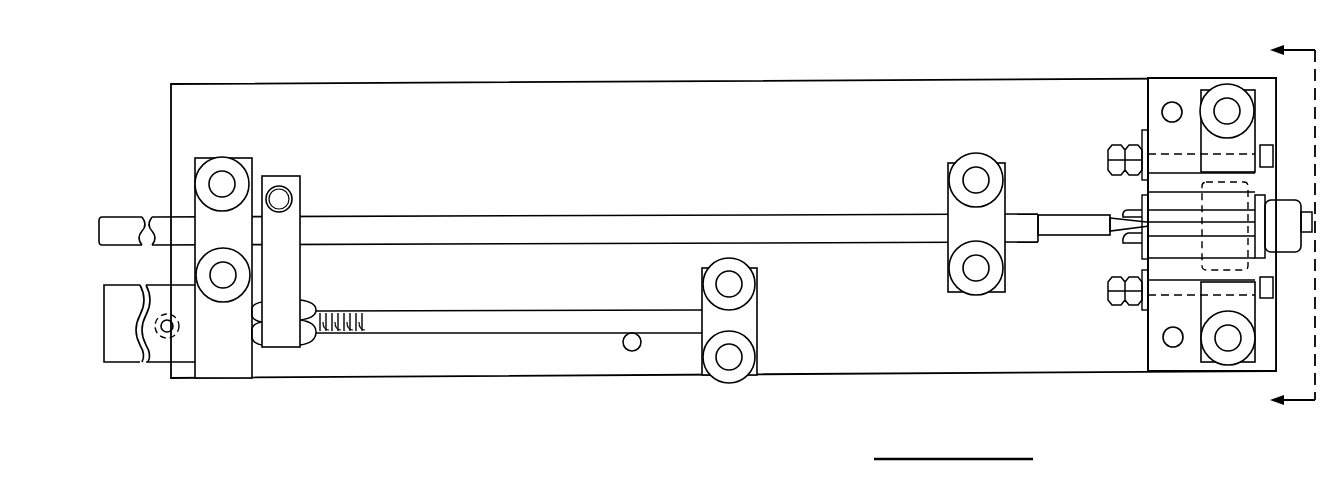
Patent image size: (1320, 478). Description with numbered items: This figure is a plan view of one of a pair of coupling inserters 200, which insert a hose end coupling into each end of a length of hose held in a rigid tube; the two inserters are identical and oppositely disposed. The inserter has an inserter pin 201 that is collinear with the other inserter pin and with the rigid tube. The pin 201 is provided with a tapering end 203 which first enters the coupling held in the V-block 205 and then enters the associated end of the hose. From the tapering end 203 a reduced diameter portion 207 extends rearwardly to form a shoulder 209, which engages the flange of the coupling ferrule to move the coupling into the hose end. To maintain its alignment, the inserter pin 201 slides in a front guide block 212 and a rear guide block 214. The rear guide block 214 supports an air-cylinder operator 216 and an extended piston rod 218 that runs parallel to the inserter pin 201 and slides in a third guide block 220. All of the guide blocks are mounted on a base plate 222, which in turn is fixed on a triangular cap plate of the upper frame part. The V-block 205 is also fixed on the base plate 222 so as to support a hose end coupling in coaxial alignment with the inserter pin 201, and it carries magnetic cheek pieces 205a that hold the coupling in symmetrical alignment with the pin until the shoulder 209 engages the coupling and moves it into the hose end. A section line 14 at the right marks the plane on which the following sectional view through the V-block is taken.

The coupling inserter 200 is at (430, 78).
The base plate 222 is at (648, 92).
The inserter pin 201 is at (474, 228).
The air-cylinder operator 216 is at (162, 350).
The rear guide block 214 is at (235, 367).
The extended piston rod 218 is at (513, 323).
The third guide block 220 is at (712, 323).
The front guide block 212 is at (957, 210).
The shoulder 209 is at (1048, 210).
The reduced diameter portion 207 is at (1082, 226).
The tapering end 203 is at (1128, 228).
The V-block 205 is at (1187, 352).
The magnetic cheek pieces 205a is at (1182, 268).
The section line 14- 14 is at (1272, 226).